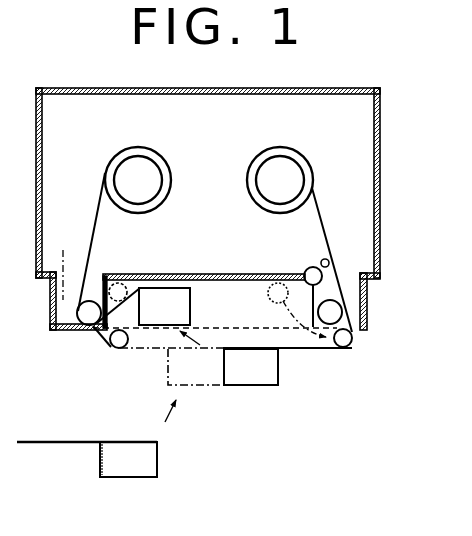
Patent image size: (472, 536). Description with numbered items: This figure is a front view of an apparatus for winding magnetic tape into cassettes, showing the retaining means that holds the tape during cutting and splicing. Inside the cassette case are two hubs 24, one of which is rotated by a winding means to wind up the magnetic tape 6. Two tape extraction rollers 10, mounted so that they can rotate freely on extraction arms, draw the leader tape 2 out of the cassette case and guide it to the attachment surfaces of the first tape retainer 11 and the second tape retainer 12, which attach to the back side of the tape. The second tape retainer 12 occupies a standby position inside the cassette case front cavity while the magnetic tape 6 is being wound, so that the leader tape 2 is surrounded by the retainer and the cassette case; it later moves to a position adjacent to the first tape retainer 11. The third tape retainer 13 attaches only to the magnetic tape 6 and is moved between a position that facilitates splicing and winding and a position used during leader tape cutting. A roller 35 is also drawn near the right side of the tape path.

The leader tape 2 is at (303, 349).
The magnetic tape 6 is at (40, 442).
The tape extraction rollers 10 is at (120, 284).
The first tape retainer 11 is at (270, 382).
The second tape retainer 12 is at (190, 312).
The third tape retainer 13 is at (147, 475).
The hubs 24 is at (293, 158).
The capstan roller 35 is at (340, 311).